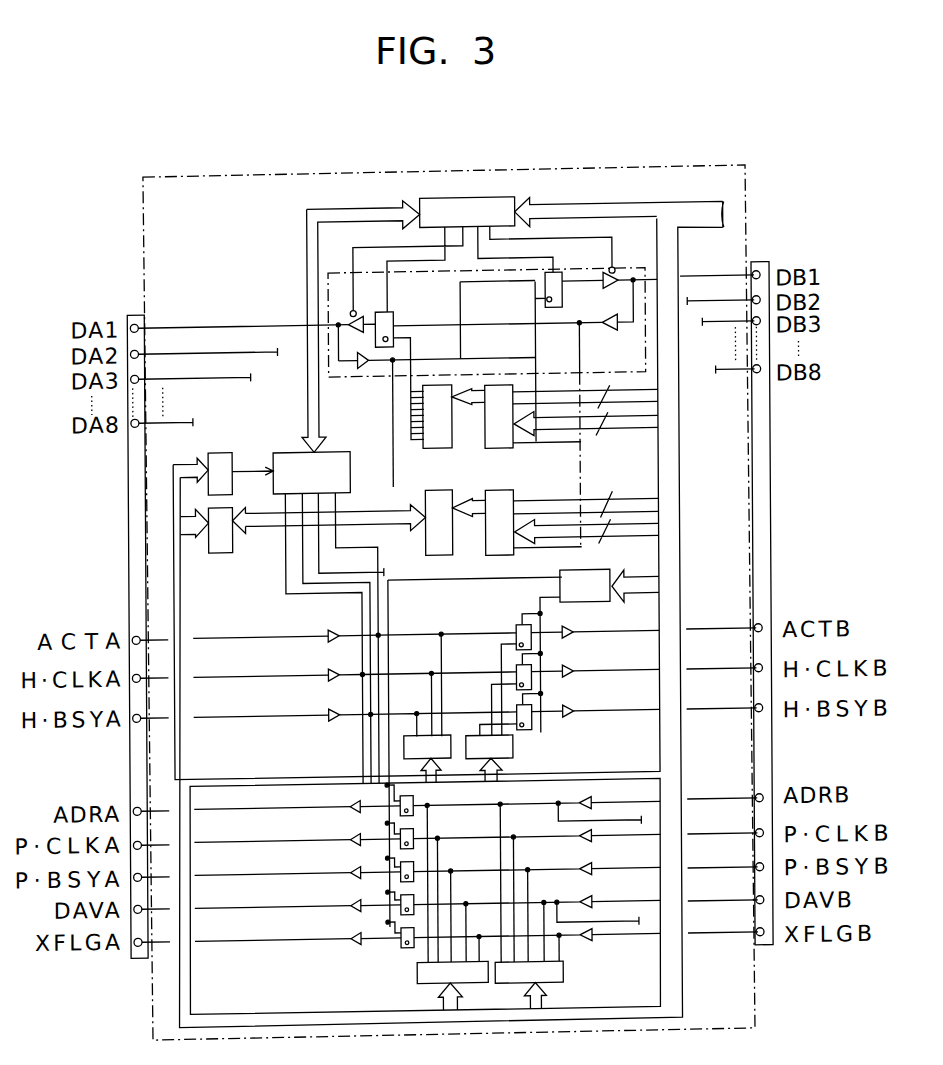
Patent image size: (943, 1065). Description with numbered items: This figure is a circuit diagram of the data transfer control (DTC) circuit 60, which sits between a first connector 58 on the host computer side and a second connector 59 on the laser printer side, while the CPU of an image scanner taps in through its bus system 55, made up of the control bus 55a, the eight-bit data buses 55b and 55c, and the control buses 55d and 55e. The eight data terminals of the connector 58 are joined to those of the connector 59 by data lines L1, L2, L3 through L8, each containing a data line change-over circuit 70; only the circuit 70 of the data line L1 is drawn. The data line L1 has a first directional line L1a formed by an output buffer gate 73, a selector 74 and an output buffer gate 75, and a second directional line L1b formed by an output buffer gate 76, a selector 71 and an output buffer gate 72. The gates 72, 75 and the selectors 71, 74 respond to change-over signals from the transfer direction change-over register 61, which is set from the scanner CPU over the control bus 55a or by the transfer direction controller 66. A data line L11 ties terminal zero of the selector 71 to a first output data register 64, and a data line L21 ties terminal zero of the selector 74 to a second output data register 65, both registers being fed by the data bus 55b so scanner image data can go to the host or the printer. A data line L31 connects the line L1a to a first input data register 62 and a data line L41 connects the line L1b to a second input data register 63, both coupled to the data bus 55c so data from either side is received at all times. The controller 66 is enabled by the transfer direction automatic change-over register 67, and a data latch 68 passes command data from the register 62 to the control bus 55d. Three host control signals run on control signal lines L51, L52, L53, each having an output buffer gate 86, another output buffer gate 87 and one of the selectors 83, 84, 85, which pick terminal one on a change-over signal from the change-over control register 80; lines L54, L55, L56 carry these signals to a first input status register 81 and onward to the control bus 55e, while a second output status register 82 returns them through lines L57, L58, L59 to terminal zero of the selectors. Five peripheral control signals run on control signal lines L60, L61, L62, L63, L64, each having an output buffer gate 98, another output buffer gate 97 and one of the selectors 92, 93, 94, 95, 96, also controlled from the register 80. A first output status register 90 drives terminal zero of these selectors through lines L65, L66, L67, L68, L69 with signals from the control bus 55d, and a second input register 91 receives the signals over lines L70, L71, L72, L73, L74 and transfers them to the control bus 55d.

The interface unit 55 is at (729, 218).
The control bus 55a is at (599, 206).
The 8-bit data bus 55b is at (662, 430).
The 8-bit data bus 55c is at (662, 538).
The control bus 55d is at (189, 1001).
The control bus 55e is at (626, 776).
The first connector 58 is at (129, 521).
The second connector 59 is at (771, 512).
The DTC circuit 60 is at (146, 200).
The transfer direction change-over register 61 is at (522, 201).
The first input data register 62 is at (421, 488).
The second input data register 63 is at (514, 491).
The first output data register 64 is at (439, 449).
The second output data register 65 is at (493, 450).
The transfer direction controller 66 is at (353, 477).
The transfer direction automatic change-over register 67 is at (213, 449).
The data latch 68 is at (219, 551).
The data line change-over circuit 70 is at (316, 297).
The selector 71 is at (394, 312).
The output buffer gate 72 is at (357, 309).
The output buffer gate 73 is at (362, 368).
The selector 74 is at (567, 300).
The output buffer gate 75 is at (616, 272).
The output buffer gate 76 is at (610, 334).
The change-over control register 80 is at (609, 574).
The first input status register 81 is at (403, 743).
The second output status register 82 is at (513, 751).
The selector 83 is at (531, 646).
The selector 84 is at (531, 686).
The selector 85 is at (531, 726).
The output buffer gate 86 is at (341, 716).
The output buffer gate 87 is at (577, 717).
The first output status register 90 is at (415, 970).
The second input register 91 is at (563, 985).
The selector 92 is at (399, 796).
The selector 93 is at (399, 831).
The selector 94 is at (399, 865).
The selector 95 is at (399, 897).
The selector 96 is at (399, 931).
The output buffer gate 97 is at (354, 941).
The output buffer gate 98 is at (586, 939).
The data line L1 is at (172, 321).
The data line L2 is at (194, 335).
The data line L3 is at (230, 350).
The data line L8 is at (179, 419).
The first directional line L1a is at (463, 294).
The second directional line L1b is at (474, 325).
The data line L11 is at (412, 390).
The data line L21 is at (539, 344).
The data line L31 is at (394, 432).
The data line L41 is at (582, 445).
The control signal line L51 is at (221, 635).
The control signal line L52 is at (216, 675).
The control signal line L53 is at (211, 715).
The control signal line L54 is at (434, 633).
The control signal line L55 is at (429, 672).
The control signal line L56 is at (416, 712).
The control signal line L57 is at (502, 642).
The control signal line L58 is at (491, 683).
The control signal line L59 is at (481, 723).
The control signal line L60 is at (231, 788).
The control signal line L61 is at (231, 823).
The control signal line L62 is at (231, 856).
The control signal line L63 is at (231, 890).
The control signal line L64 is at (231, 923).
The control signal line L65 is at (429, 816).
The control signal line L66 is at (439, 856).
The control signal line L67 is at (451, 890).
The control signal line L68 is at (466, 926).
The control signal line L69 is at (524, 994).
The control signal line L70 is at (503, 823).
The control signal line L71 is at (515, 856).
The control signal line L72 is at (529, 892).
The control signal line L73 is at (544, 917).
The control signal line L74 is at (559, 950).